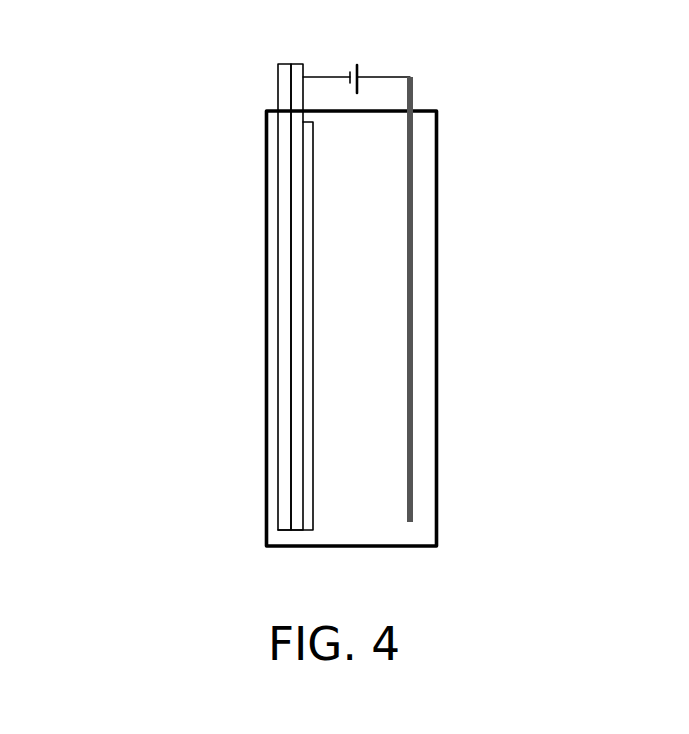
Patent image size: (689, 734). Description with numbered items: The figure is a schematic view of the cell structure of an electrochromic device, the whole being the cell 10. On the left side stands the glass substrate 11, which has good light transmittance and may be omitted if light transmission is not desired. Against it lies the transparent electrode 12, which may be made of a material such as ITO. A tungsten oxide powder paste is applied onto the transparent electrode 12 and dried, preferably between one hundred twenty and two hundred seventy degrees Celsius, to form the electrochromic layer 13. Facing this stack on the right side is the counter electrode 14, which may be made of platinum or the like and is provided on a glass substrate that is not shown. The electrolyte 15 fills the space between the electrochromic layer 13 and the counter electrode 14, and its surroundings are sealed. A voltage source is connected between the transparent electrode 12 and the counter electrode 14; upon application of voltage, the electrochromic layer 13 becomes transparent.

The cell 10 is at (295, 305).
The glass substrate 11 is at (285, 193).
The transparent electrode 12 is at (297, 235).
The electrochromic layer 13 is at (310, 260).
The counter electrode 14 is at (410, 203).
The electrolyte 15 is at (358, 333).